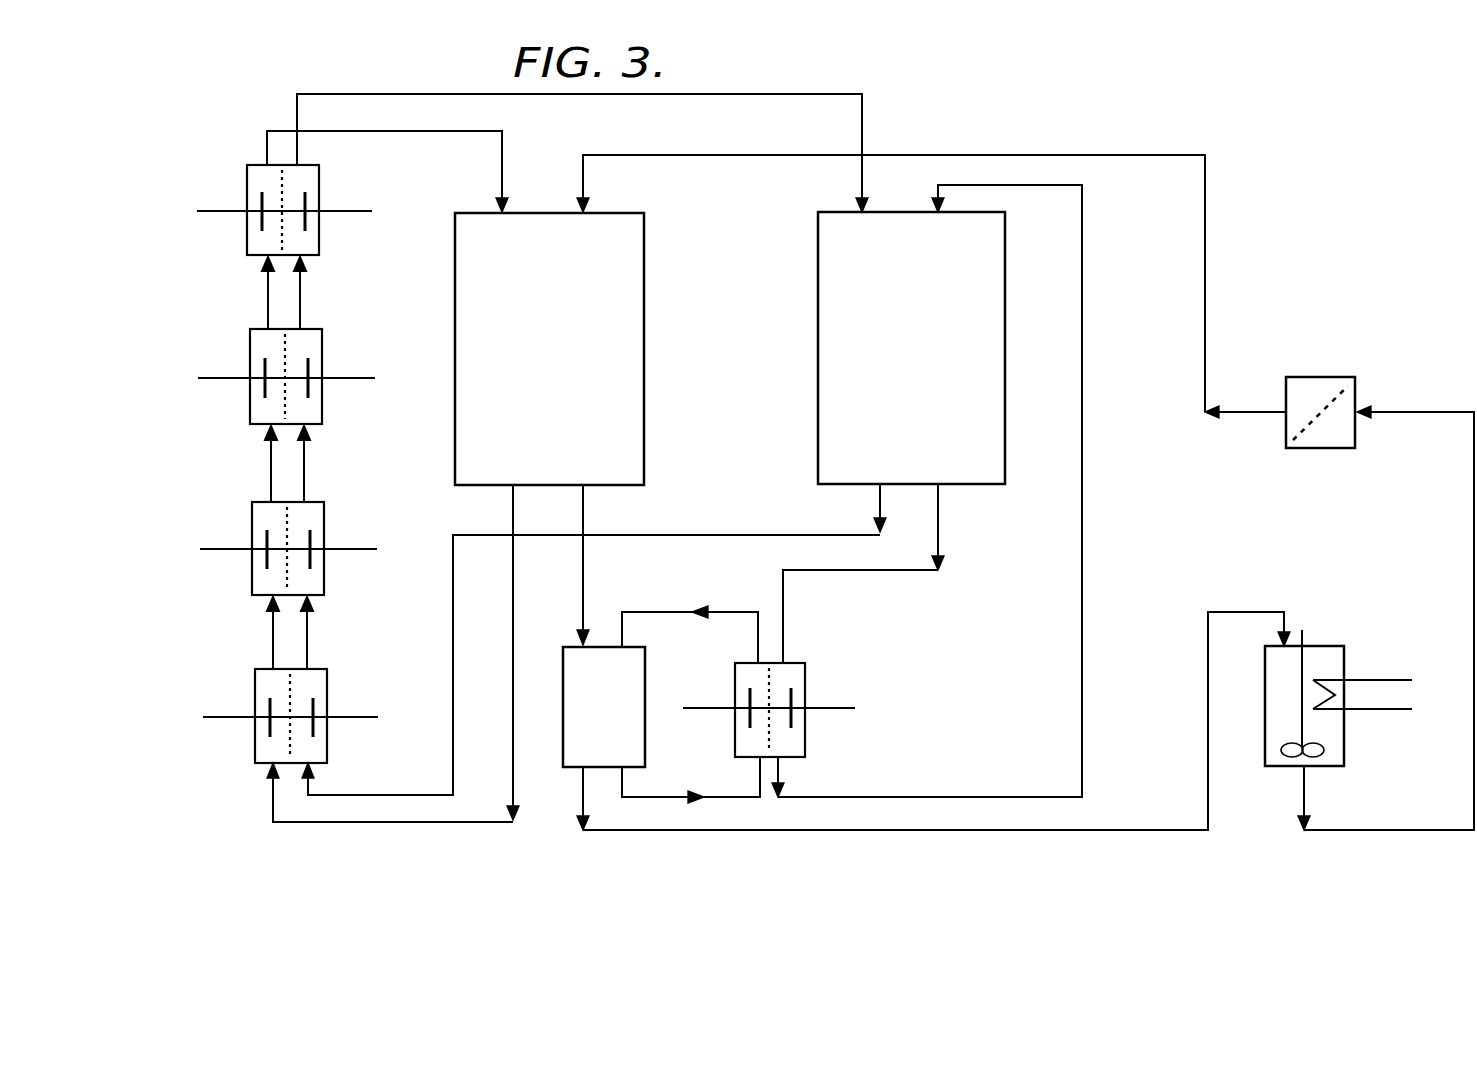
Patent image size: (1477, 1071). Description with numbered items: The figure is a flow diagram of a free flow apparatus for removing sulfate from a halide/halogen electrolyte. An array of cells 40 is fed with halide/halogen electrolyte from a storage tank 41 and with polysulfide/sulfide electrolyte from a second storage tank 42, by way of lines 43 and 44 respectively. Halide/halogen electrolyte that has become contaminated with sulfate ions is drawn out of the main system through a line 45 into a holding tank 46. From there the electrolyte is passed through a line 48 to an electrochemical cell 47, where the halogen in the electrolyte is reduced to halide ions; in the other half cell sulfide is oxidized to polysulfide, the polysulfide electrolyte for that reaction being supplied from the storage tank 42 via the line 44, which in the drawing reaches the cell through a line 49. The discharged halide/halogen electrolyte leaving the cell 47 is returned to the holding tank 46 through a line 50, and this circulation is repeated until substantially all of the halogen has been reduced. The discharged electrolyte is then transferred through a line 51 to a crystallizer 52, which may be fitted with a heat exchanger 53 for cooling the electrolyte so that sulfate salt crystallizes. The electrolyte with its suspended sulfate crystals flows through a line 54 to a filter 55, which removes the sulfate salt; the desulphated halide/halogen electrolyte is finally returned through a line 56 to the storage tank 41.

The array of cells 40 is at (250, 464).
The storage tank 41 is at (645, 286).
The storage tank 42 is at (817, 293).
The line 43 is at (322, 824).
The line 44 is at (408, 796).
The line 45 is at (584, 510).
The holding tank 46 is at (560, 655).
The electrochemical cell 47 is at (806, 740).
The line 48 is at (665, 795).
The polysulphide electrolyte line to electrochemical cell 49 is at (888, 572).
The line 50 is at (670, 600).
The line 51 is at (697, 832).
The crystallizer 52 is at (1330, 645).
The heat exchanger 53 is at (1385, 679).
The line 54 is at (1473, 514).
The filter 55 is at (1286, 383).
The line 56 is at (1024, 153).